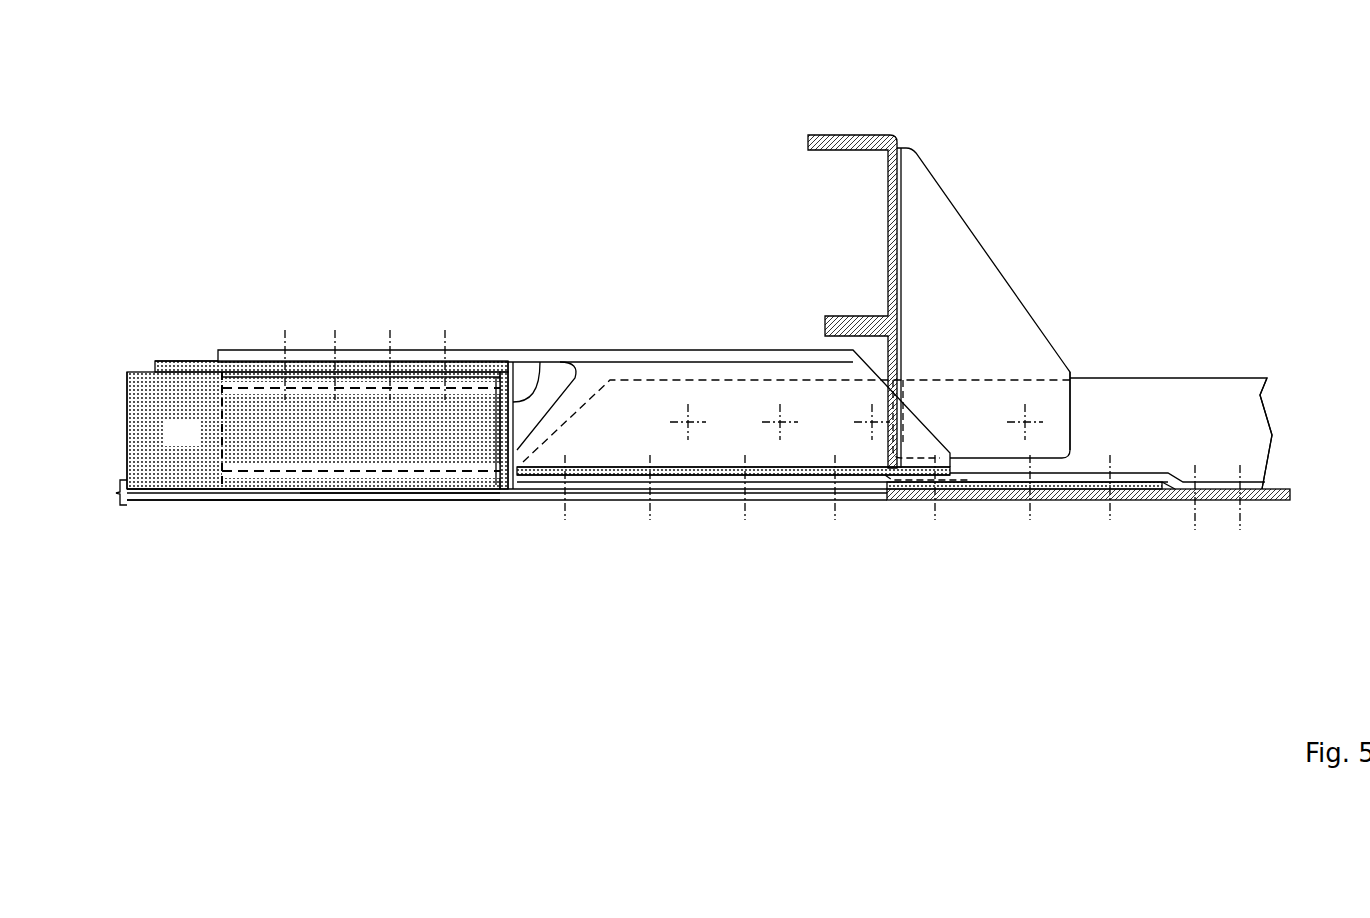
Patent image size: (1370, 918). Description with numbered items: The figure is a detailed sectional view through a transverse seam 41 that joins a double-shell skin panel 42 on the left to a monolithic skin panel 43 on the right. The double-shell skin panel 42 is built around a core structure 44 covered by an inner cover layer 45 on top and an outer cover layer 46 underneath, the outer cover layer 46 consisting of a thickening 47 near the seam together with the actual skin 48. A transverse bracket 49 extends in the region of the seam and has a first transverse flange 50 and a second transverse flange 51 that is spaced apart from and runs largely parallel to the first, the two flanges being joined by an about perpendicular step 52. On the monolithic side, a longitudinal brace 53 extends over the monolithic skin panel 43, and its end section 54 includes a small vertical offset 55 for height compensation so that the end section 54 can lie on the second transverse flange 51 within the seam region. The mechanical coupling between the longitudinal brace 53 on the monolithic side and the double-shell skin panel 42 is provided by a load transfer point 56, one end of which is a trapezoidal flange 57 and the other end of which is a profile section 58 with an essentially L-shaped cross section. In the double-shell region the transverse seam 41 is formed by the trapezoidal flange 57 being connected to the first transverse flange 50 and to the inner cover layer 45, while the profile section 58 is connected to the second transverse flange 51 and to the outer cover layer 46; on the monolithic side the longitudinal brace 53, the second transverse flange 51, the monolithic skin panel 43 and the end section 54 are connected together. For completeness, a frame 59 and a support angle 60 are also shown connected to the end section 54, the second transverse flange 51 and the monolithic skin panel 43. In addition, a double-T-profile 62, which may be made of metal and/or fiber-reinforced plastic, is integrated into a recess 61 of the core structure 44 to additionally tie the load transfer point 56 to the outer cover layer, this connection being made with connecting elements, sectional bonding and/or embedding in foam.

The transverse seam 41 is at (888, 533).
The double-shell skin panel 42 is at (303, 543).
The monolithic skin panel 43 is at (1270, 500).
The core structure 44 is at (313, 430).
The inner cover layer 45 is at (135, 370).
The outer cover layer 46 is at (116, 493).
The thickening 47 is at (145, 492).
The skin 48 is at (197, 494).
The transverse bracket 49 is at (184, 356).
The first transverse flange 50 is at (355, 372).
The second transverse flange 51 is at (1000, 500).
The step 52 is at (538, 362).
The longitudinal brace 53 is at (1240, 398).
The end section 54 is at (1077, 362).
The vertical offset 55 is at (1166, 491).
The load transfer point 56 is at (793, 412).
The trapezoidal flange 57 is at (420, 352).
The profile section 58 is at (663, 437).
The frame 59 is at (876, 142).
The support angle 60 is at (952, 242).
The recess 61 is at (422, 442).
The double-T-profile 62 is at (385, 492).